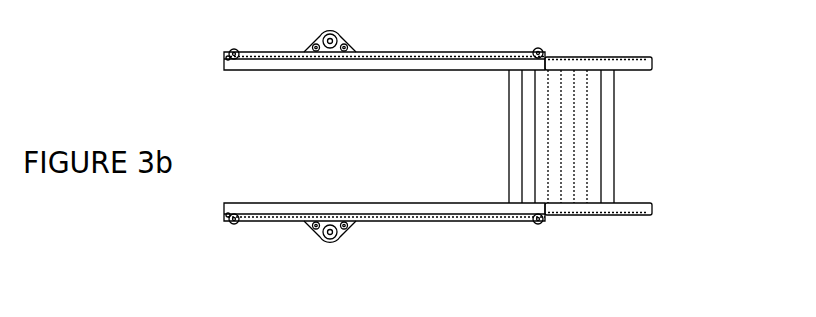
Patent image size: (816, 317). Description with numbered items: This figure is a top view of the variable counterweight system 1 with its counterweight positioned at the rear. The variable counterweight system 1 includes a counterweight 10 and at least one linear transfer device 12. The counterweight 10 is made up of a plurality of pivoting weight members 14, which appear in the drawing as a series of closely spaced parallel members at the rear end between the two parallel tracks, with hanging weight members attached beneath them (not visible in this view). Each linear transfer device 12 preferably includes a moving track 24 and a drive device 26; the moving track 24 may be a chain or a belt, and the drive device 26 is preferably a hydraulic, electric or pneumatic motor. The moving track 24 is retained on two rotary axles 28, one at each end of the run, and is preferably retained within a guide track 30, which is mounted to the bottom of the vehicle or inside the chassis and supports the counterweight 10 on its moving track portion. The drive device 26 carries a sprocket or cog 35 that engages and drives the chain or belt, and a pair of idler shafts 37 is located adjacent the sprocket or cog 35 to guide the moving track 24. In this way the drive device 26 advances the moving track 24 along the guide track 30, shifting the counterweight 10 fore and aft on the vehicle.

The variable counterweight system 1 is at (672, 29).
The counterweight 10 is at (492, 140).
The linear transfer device 12 is at (205, 72).
The pivoting weight members 14 is at (608, 147).
The moving track 24 is at (257, 222).
The drive device 26 is at (331, 49).
The rotary axles 28 is at (226, 59).
The guide track 30 is at (417, 72).
The sprocket or cog 35 is at (234, 49).
The idler shafts 37 is at (316, 222).